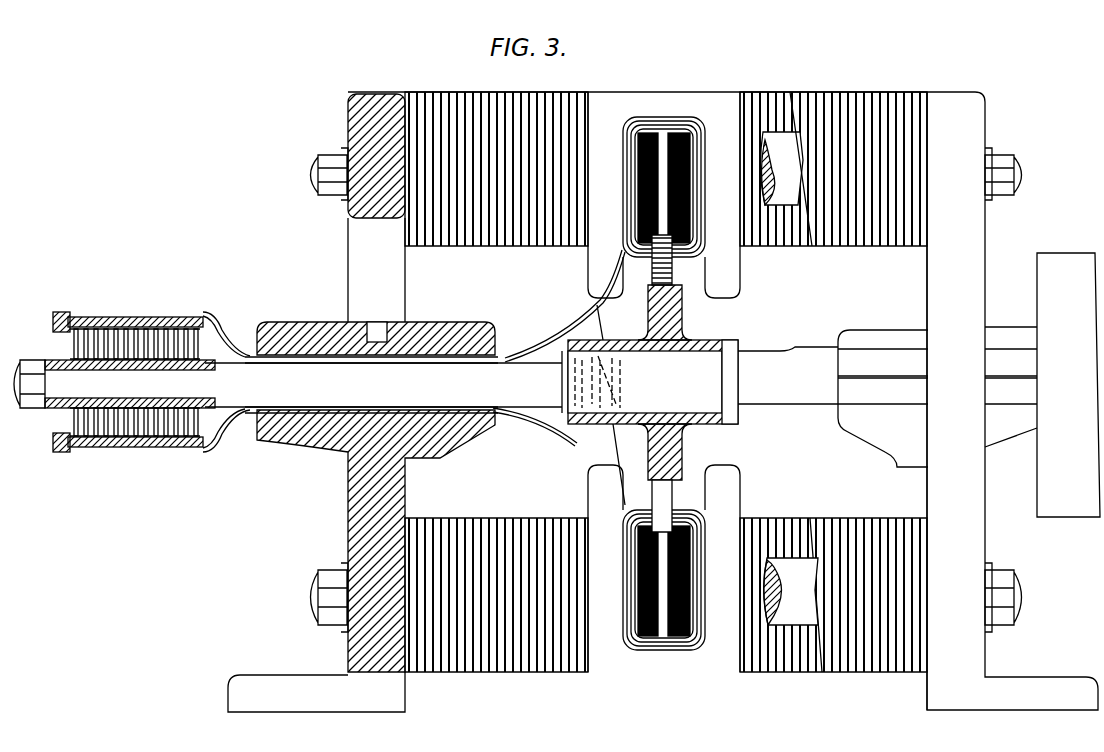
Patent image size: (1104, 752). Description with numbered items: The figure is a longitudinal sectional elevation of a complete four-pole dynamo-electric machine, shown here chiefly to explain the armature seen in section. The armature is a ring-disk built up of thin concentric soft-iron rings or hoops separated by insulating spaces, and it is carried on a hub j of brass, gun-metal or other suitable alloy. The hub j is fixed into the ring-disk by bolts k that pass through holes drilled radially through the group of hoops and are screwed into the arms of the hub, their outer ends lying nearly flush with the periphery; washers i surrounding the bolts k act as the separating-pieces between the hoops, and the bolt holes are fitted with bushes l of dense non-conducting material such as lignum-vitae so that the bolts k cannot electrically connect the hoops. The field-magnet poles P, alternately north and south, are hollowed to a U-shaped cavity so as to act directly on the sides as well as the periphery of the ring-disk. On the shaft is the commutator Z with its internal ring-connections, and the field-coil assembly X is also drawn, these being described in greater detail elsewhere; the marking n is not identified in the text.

The commutator Z is at (132, 370).
The field magnet coil assembly X is at (657, 382).
The field-magnet pole P is at (664, 382).
The hub j is at (665, 383).
The bolt k is at (660, 646).
The bush l is at (685, 646).
The coil winding n is at (680, 554).
The washer i is at (684, 578).